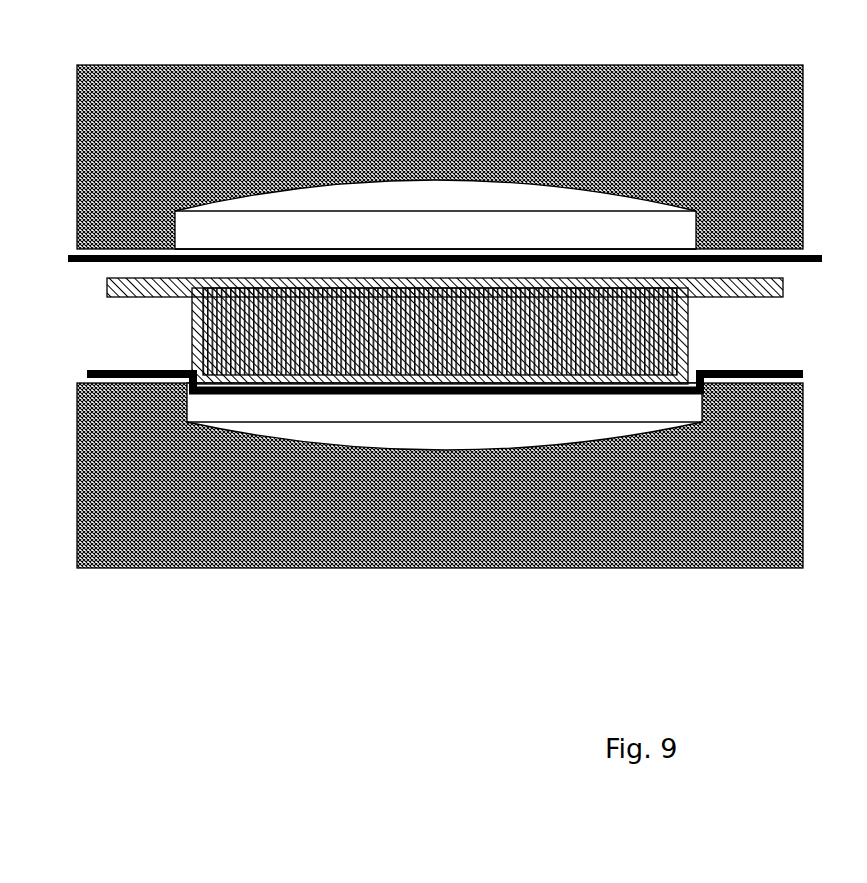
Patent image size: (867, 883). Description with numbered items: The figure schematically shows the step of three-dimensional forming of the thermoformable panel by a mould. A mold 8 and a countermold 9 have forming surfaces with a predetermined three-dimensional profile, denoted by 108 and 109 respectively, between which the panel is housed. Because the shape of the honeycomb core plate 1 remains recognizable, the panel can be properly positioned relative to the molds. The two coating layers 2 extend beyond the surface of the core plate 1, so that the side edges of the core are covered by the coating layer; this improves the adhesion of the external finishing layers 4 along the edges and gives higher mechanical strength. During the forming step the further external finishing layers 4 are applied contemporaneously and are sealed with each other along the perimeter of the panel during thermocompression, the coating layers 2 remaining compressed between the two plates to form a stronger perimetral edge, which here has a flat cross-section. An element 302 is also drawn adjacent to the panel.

The upper mold half 9 is at (145, 85).
The upper mold recess with curved surface 109 is at (328, 190).
The lower mold half 8 is at (270, 548).
The lower mold recess with curved surface 108 is at (455, 450).
The electrode plates 4 is at (95, 262).
The cover plate 302 is at (745, 279).
The cell frame 2 is at (262, 282).
The photovoltaic cell 1 is at (442, 347).